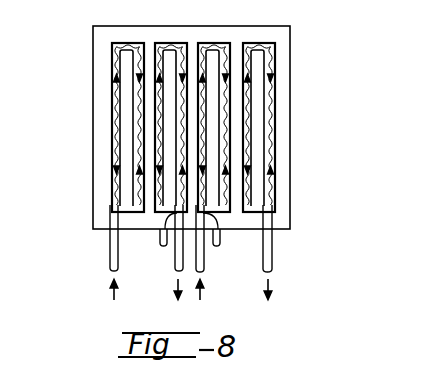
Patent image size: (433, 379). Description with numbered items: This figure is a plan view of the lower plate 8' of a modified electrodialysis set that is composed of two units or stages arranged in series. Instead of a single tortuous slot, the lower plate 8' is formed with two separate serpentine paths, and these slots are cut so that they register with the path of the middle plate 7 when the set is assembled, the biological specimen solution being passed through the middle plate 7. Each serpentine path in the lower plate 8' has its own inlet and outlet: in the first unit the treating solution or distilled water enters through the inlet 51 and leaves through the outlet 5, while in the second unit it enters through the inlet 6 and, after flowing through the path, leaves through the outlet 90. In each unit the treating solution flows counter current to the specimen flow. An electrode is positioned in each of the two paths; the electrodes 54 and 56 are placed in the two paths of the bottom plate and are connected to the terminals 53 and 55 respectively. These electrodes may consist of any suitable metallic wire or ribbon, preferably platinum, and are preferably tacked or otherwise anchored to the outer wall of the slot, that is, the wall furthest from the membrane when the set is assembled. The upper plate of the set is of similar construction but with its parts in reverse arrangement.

The lower plate 8' is at (215, 127).
The middle plate 7 is at (255, 91).
The electrode 56 is at (112, 144).
The electrode 54 is at (272, 150).
The terminal 55 is at (160, 243).
The terminal 53 is at (220, 243).
The inlet 6 is at (110, 268).
The outlet 90 is at (175, 268).
The inlet 51 is at (204, 270).
The outlet 5 is at (272, 270).